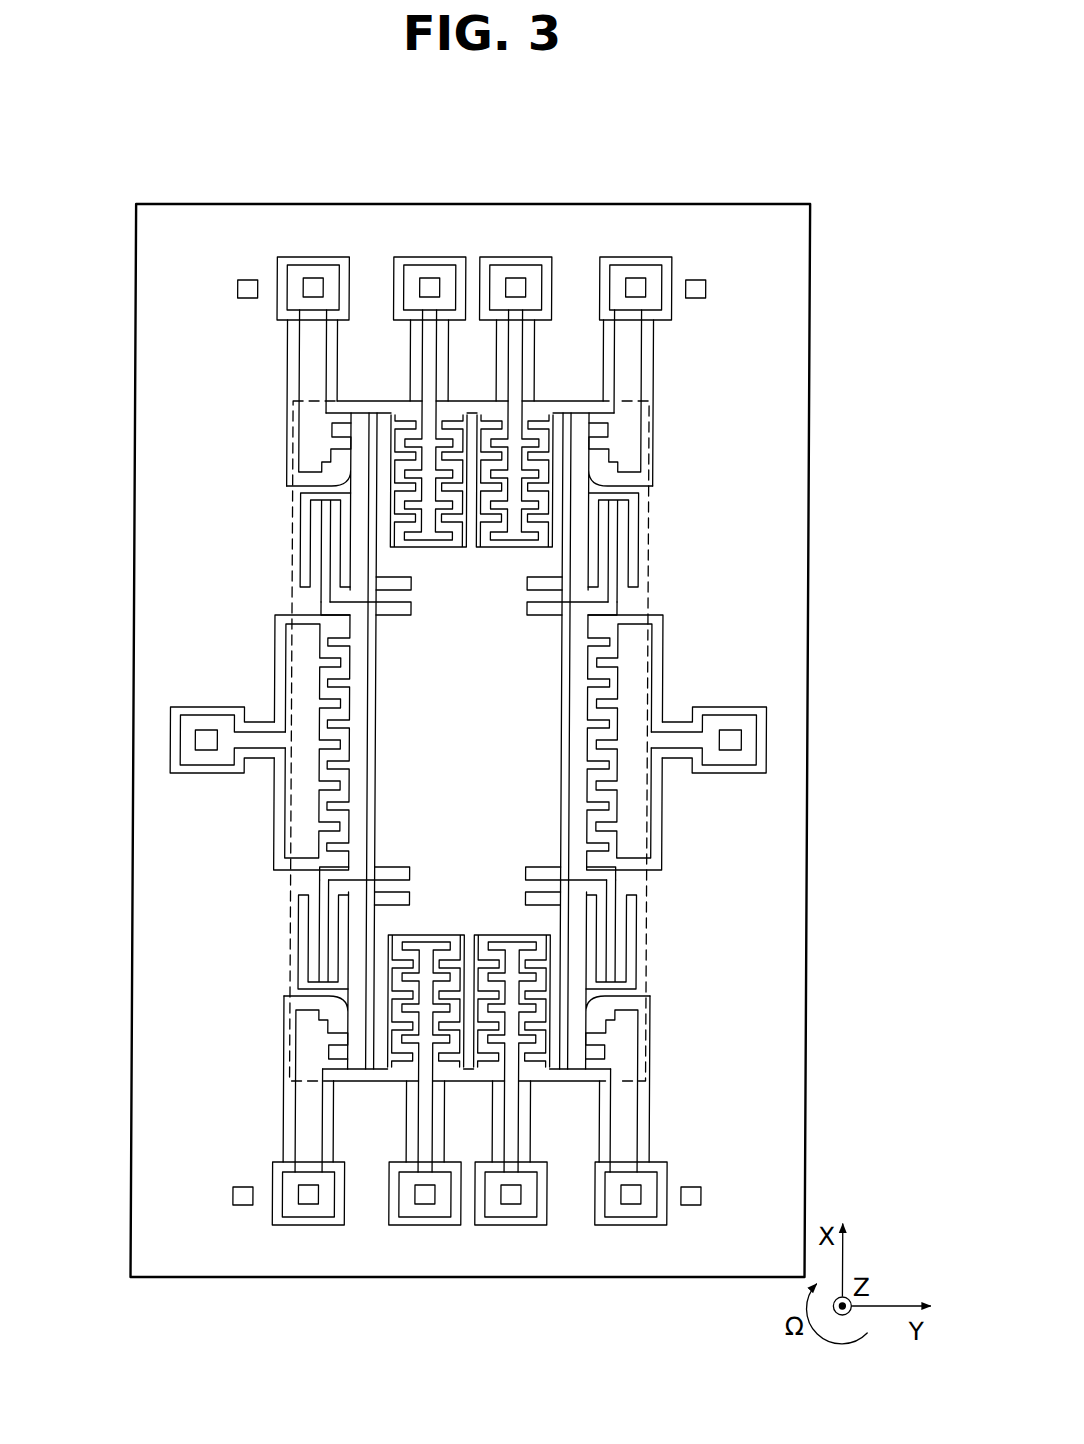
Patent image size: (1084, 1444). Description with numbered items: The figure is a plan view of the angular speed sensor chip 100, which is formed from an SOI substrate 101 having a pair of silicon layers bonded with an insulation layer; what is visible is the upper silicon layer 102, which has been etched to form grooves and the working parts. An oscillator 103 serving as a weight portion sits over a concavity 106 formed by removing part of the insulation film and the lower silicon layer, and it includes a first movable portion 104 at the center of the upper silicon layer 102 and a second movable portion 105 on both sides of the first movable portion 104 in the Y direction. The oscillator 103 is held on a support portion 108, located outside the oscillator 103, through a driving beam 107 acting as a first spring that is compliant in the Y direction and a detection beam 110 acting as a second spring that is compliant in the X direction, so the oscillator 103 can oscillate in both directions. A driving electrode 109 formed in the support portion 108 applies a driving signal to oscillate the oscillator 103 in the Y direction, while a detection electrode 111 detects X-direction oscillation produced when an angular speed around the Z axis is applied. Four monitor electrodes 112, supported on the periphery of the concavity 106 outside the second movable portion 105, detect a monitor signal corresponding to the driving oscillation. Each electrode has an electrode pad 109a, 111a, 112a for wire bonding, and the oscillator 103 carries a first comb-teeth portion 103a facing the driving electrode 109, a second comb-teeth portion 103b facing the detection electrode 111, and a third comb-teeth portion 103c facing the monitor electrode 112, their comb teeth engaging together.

The angular speed sensor chip 100 is at (782, 206).
The SOI substrate 101 is at (814, 276).
The upper silicon layer 102 is at (778, 314).
The oscillator 103 is at (471, 742).
The first comb-teeth portion 103a is at (337, 640).
The second comb-teeth portion 103b is at (472, 421).
The third comb-teeth portion 103c is at (303, 488).
The first movable portion 104 is at (483, 923).
The second movable portion 105 is at (358, 907).
The concavity 106 is at (650, 533).
The driving beam 107 is at (317, 543).
The support portion 108 is at (228, 255).
The driving electrode 109 is at (300, 688).
The electrode pad 109a is at (207, 742).
The detection beam 110 is at (390, 597).
The detection electrode 111 is at (427, 417).
The electrode pad 111a is at (430, 288).
The monitor electrode 112 is at (310, 442).
The electrode pad 112a is at (313, 288).